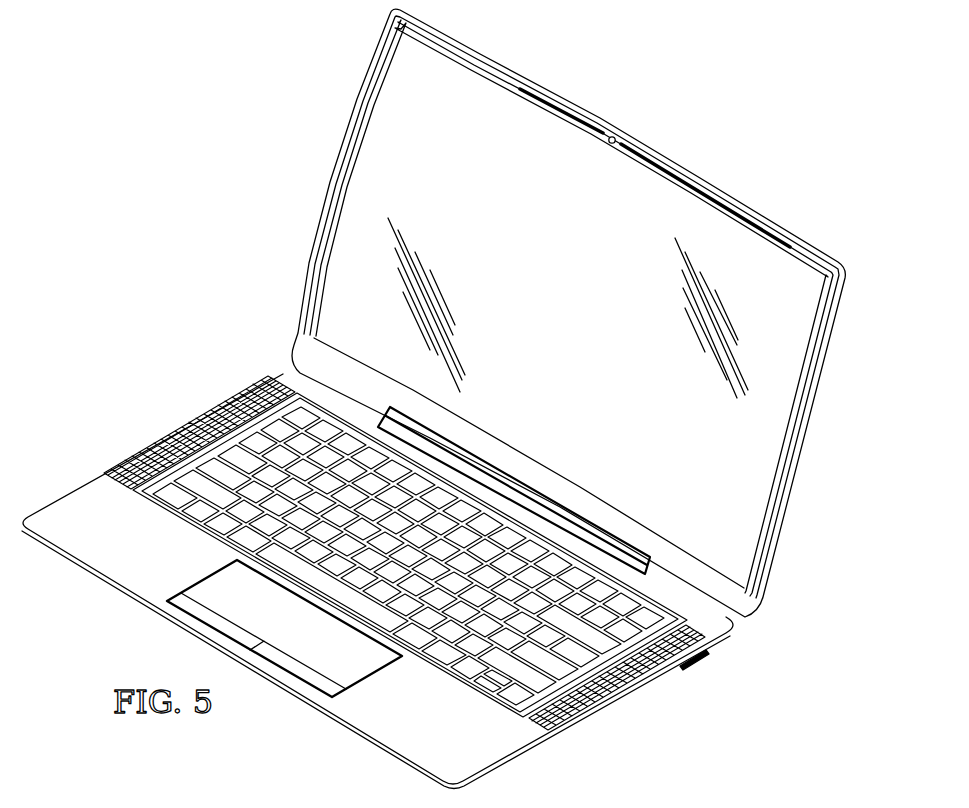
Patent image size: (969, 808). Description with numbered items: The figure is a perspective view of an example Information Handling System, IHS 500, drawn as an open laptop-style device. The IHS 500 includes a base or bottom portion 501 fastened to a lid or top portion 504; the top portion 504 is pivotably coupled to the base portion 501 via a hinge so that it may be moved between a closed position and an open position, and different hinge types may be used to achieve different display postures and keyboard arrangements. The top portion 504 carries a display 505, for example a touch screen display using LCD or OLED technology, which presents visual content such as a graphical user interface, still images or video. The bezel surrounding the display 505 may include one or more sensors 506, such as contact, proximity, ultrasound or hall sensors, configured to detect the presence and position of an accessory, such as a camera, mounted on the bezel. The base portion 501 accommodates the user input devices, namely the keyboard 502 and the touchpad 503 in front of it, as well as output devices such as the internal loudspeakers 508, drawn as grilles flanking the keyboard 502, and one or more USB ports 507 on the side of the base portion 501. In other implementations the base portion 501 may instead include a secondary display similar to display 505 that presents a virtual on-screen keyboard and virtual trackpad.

The Information Handling System (IHS) 500 is at (447, 398).
The base portion 501 is at (67, 497).
The keyboard 502 is at (215, 514).
The touchpad 503 is at (360, 664).
The top portion 504 is at (350, 148).
The display 505 is at (578, 321).
The sensors 506 is at (363, 74).
The USB port 507 is at (698, 662).
The internal loudspeakers 508 is at (190, 425).